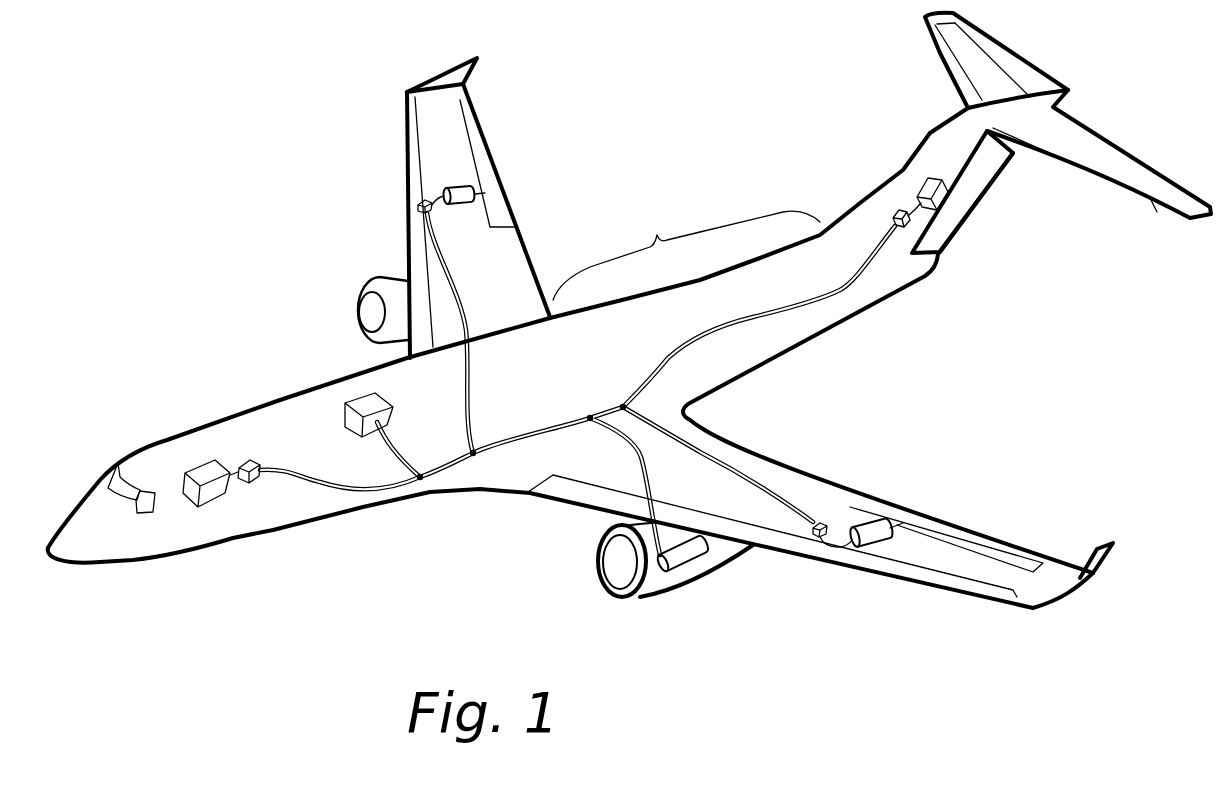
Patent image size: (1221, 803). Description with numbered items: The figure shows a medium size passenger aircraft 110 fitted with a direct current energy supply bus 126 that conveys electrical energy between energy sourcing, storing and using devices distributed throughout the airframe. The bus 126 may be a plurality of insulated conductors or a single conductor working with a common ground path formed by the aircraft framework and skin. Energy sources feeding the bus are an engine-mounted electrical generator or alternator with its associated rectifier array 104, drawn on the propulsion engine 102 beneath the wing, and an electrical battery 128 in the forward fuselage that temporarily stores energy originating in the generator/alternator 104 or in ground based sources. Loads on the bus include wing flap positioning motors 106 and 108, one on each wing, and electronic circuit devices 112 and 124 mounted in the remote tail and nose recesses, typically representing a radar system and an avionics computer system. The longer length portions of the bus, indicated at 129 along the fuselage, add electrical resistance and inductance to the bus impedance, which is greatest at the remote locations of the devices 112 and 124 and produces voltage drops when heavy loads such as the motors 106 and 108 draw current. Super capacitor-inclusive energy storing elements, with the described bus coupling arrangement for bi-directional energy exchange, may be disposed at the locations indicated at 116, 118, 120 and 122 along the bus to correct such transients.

The engine 102 is at (597, 557).
The electrical generator or alternator and associated rectifier array 104 is at (680, 577).
The wing flap positioning motor 106 is at (865, 515).
The wing flap positioning motor 108 is at (457, 183).
The aircraft 110 is at (273, 407).
The electronic circuit device 112 is at (920, 180).
The super capacitor energy storing element location 116 is at (258, 480).
The super capacitor energy storing element location 118 is at (893, 213).
The super capacitor energy storing element location 120 is at (830, 520).
The super capacitor energy storing element location 122 is at (418, 210).
The electronic circuit device 124 is at (200, 462).
The direct current energy supply bus 126 is at (505, 437).
The electrical battery 128 is at (353, 400).
The longer length portion of the energy supply bus 129 is at (686, 254).